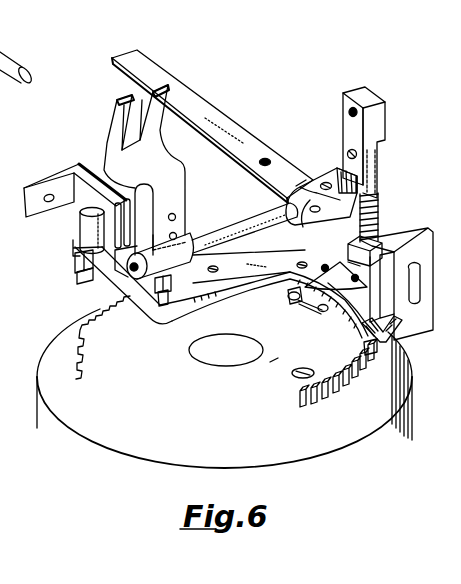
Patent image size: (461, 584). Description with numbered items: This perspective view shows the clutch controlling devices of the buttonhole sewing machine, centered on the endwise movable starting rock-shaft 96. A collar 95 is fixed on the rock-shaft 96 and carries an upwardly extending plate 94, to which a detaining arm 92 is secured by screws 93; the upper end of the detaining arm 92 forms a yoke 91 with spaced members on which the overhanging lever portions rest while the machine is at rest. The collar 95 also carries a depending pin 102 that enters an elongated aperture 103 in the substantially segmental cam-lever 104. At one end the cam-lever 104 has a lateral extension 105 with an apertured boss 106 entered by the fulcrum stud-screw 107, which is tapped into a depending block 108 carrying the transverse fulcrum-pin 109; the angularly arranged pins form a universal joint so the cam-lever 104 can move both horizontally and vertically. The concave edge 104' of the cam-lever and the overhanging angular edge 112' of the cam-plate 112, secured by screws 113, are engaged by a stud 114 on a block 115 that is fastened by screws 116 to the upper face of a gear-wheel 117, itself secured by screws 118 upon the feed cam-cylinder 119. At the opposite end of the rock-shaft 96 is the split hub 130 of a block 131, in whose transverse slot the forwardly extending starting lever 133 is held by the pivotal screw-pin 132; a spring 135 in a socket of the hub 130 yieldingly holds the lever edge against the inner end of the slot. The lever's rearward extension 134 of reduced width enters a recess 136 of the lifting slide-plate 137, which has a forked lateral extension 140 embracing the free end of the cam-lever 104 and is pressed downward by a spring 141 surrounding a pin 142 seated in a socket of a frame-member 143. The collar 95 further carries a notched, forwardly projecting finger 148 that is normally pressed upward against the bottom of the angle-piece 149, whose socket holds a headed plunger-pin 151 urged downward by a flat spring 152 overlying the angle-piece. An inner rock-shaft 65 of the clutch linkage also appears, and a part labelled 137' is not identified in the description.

The inner rock-shaft 65 is at (4, 64).
The starting lever 133 is at (212, 126).
The yoke 91 is at (126, 120).
The detaining arm 92 is at (145, 167).
The flat spring 152 is at (84, 160).
The angle-piece 149 is at (78, 170).
The headed plunger-pin 151 is at (115, 210).
The plate 94 is at (140, 219).
The finger 148 is at (136, 237).
The screws 93 is at (176, 218).
The fulcrum stud-screw 107 is at (84, 216).
The apertured boss 106 is at (81, 238).
The lateral extension 105 is at (76, 260).
The transverse fulcrum-pin 109 is at (78, 278).
The depending block 108 is at (104, 270).
The collar 95 is at (154, 256).
The depending pin 102 is at (172, 285).
The elongated aperture 103 is at (162, 303).
The starting rock-shaft 96 is at (241, 229).
The split hub 130 is at (283, 204).
The pivotal screw-pin 132 is at (325, 182).
The block 131 is at (304, 183).
The frame-member 143 is at (384, 152).
The pin 142 is at (380, 180).
The spring 141 is at (380, 213).
The rearward extension 134 is at (381, 240).
The lifting slide-plate 137 is at (410, 284).
The spring 135 is at (422, 296).
The recess 136 is at (383, 287).
The forked lateral extension 140 is at (390, 344).
The cam-lever 104 is at (227, 291).
The concave edge 104' is at (261, 307).
The screws 113 is at (338, 266).
The cam-plate 112 is at (340, 276).
The overhanging angular edge 112' is at (294, 255).
The block end 137' is at (341, 250).
The screws 116 is at (289, 299).
The stud 114 is at (308, 306).
The block 115 is at (289, 303).
The gear-wheel 117 is at (286, 353).
The screws 118 is at (308, 368).
The feed cam-cylinder 119 is at (398, 381).